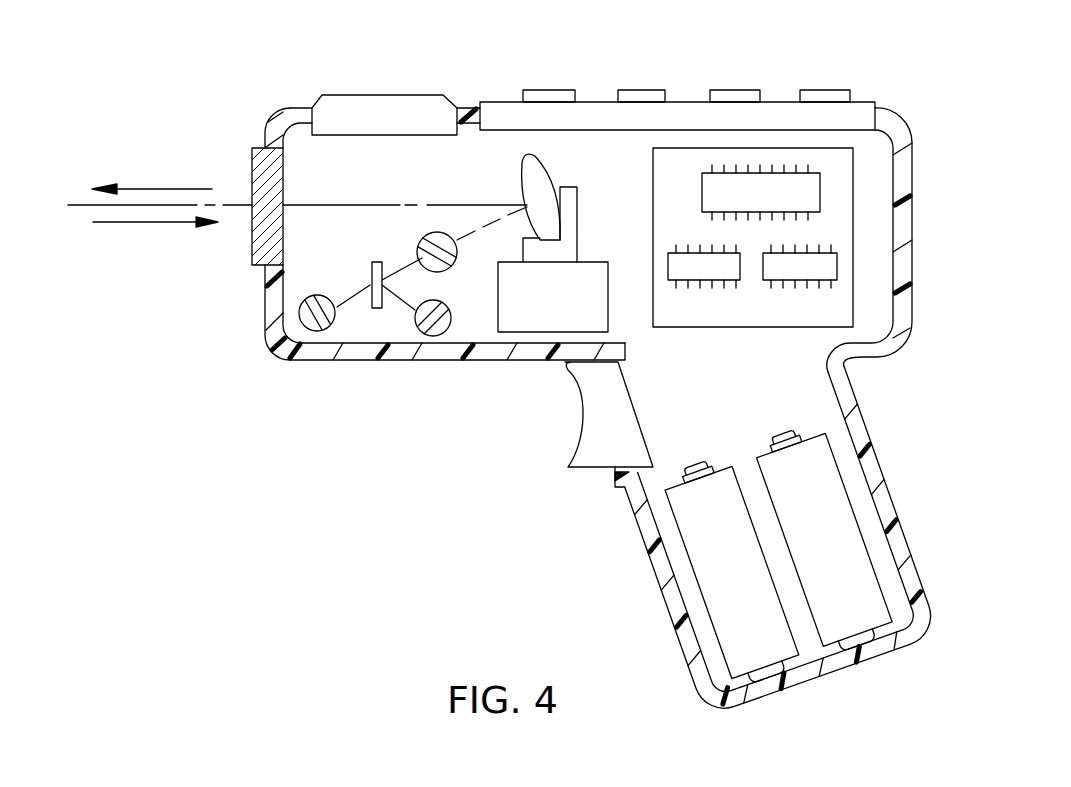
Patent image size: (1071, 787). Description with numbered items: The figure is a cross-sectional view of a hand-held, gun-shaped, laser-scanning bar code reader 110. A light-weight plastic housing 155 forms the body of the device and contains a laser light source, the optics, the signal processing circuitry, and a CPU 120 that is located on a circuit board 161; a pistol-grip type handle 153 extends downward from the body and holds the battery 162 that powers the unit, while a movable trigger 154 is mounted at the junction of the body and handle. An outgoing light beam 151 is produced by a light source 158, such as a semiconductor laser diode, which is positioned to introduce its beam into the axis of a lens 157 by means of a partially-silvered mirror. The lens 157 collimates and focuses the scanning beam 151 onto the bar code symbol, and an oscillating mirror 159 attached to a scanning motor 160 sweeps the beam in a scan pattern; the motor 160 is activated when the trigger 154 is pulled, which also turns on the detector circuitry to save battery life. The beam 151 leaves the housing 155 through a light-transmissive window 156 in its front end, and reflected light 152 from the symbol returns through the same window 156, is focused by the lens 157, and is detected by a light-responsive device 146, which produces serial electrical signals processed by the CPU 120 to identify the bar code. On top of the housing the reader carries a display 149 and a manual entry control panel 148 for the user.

The reader 110 is at (476, 541).
The CPU 120 is at (752, 183).
The light-responsive device 146 is at (315, 332).
The manual entry control panel 148 is at (770, 107).
The display 149 is at (372, 107).
The outgoing light beam 151 is at (148, 187).
The reflected light 152 is at (152, 225).
The handle 153 is at (658, 585).
The trigger 154 is at (575, 437).
The housing 155 is at (910, 215).
The light-transmissive window 156 is at (250, 163).
The lens 157 is at (440, 232).
The light source 158 is at (425, 332).
The oscillating mirror 159 is at (557, 170).
The scanning motor 160 is at (547, 317).
The circuit board 161 is at (827, 157).
The battery 162 is at (837, 502).